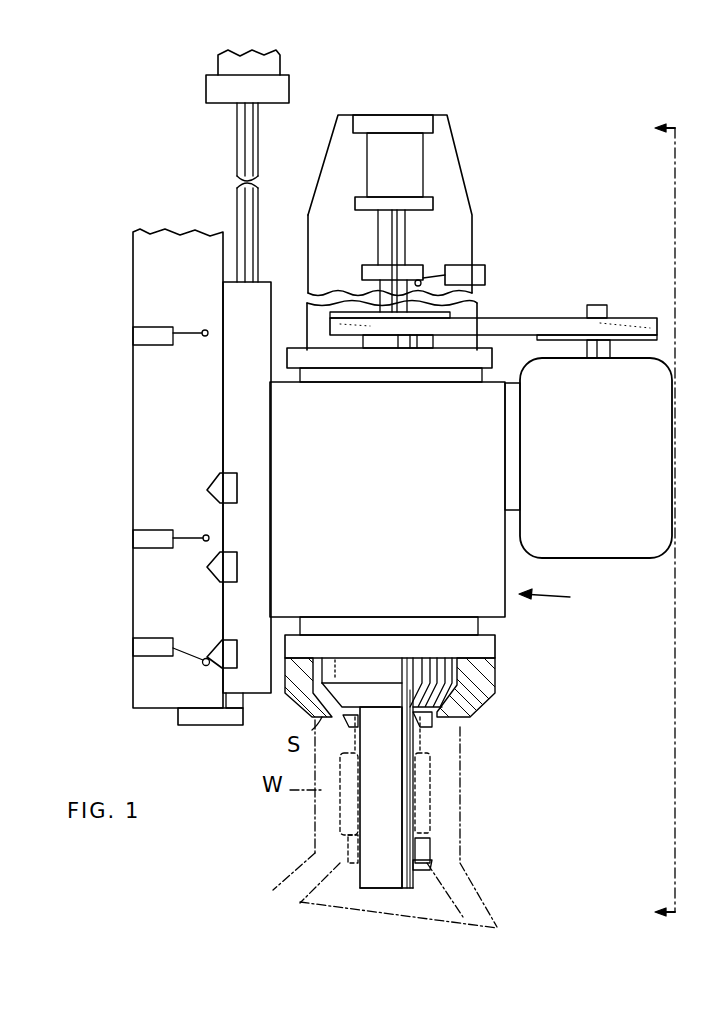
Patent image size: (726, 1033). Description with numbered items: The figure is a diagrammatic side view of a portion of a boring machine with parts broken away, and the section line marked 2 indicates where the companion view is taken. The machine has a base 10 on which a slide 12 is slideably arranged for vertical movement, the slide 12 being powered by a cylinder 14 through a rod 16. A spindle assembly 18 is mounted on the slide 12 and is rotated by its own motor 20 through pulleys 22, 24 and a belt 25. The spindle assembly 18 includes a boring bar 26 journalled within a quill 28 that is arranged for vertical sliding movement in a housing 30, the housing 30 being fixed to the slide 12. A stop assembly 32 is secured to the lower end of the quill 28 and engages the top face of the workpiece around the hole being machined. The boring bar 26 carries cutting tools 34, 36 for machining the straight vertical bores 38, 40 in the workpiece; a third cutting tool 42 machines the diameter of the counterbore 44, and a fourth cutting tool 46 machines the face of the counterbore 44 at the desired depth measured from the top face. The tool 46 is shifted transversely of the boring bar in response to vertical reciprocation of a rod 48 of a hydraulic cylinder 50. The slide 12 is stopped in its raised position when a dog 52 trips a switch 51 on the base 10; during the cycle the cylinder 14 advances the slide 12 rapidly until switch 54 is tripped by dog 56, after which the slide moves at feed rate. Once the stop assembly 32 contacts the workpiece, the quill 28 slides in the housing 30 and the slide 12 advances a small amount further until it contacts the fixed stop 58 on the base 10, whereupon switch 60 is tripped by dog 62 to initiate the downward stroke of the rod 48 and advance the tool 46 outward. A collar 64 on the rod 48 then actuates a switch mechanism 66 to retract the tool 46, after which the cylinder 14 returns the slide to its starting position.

The section line 2- 2 is at (651, 518).
The base 10 is at (163, 232).
The slide 12 is at (228, 385).
The cylinder 14 is at (281, 71).
The rod 16 is at (258, 137).
The spindle assembly 18 is at (559, 601).
The motor 20 is at (596, 458).
The pulley 22 is at (433, 341).
The pulley 24 is at (493, 326).
The belt 25 is at (507, 318).
The boring bar 26 is at (370, 810).
The quill 28 is at (495, 630).
The housing 30 is at (395, 482).
The stop assembly 32 is at (500, 687).
The cutting tool 34 is at (423, 865).
The cutting tool 36 is at (420, 783).
The bore 38 is at (432, 848).
The bore 40 is at (358, 752).
The third cutting tool 42 is at (356, 717).
The counterbore 44 is at (418, 757).
The fourth cutting tool 46 is at (430, 724).
The rod 48 is at (388, 241).
The hydraulic cylinder 50 is at (425, 158).
The switch 51 is at (157, 328).
The dog 52 is at (222, 488).
The switch 54 is at (143, 549).
The dog 56 is at (235, 558).
The fixed stop 58 is at (233, 722).
The switch 60 is at (142, 651).
The dog 62 is at (230, 673).
The collar 64 is at (416, 268).
The switch mechanism 66 is at (484, 275).